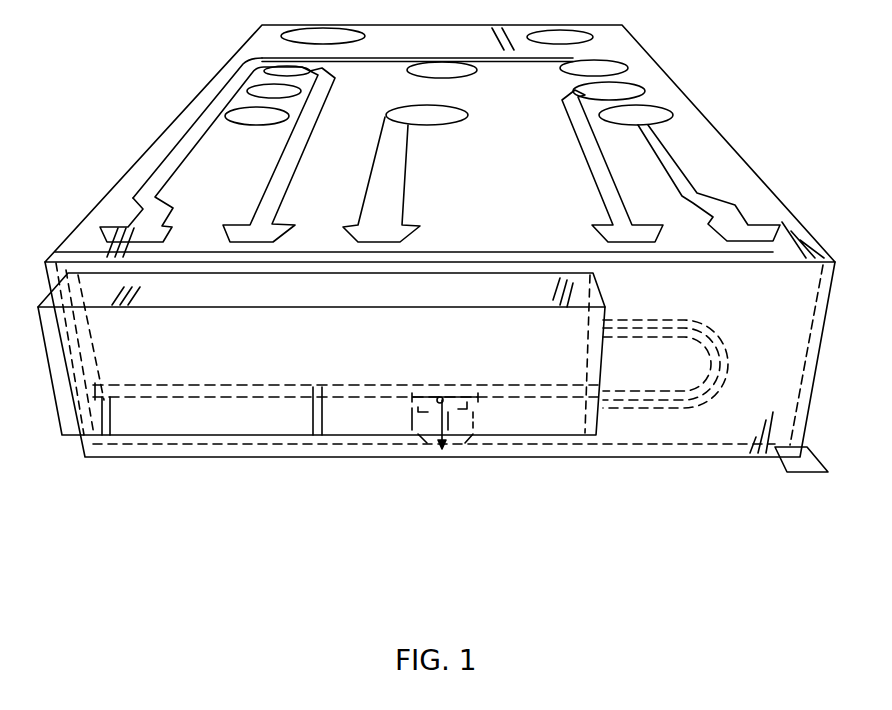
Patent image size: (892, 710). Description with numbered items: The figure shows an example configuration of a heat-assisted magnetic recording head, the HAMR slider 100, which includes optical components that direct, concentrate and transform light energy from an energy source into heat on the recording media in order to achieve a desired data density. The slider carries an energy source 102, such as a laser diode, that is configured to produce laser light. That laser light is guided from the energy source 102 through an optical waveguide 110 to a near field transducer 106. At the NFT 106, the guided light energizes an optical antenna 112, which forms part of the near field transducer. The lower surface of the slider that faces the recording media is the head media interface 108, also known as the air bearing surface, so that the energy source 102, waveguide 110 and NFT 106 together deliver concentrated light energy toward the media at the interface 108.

The HAMR slider 100 is at (669, 61).
The energy source 102 is at (215, 358).
The near field transducer 106 is at (442, 452).
The head media interface 108 is at (822, 475).
The optical waveguide 110 is at (667, 405).
The optical antenna 112 is at (430, 408).